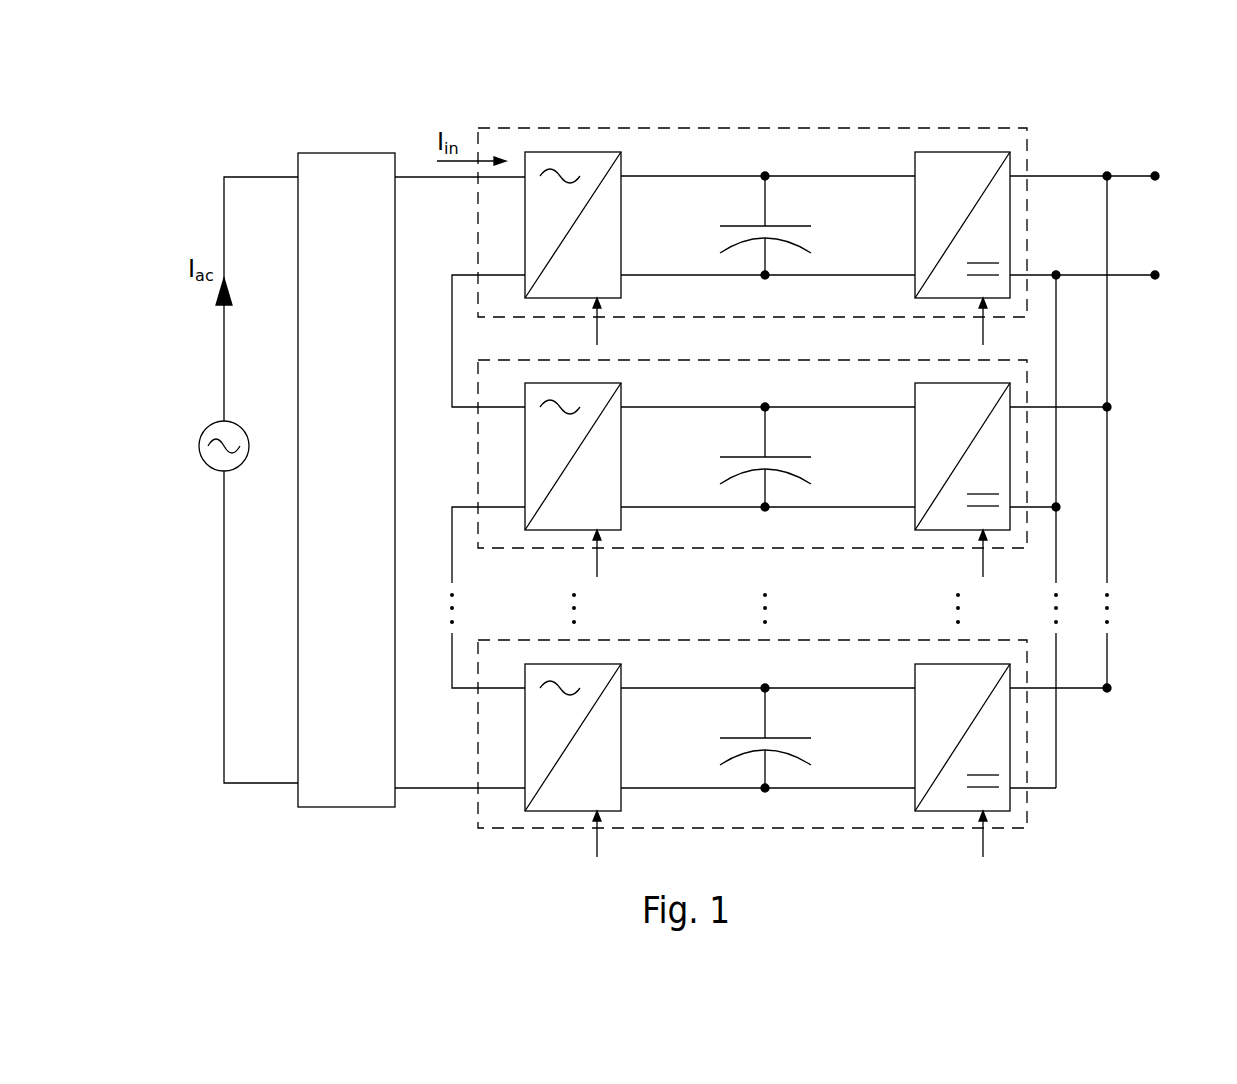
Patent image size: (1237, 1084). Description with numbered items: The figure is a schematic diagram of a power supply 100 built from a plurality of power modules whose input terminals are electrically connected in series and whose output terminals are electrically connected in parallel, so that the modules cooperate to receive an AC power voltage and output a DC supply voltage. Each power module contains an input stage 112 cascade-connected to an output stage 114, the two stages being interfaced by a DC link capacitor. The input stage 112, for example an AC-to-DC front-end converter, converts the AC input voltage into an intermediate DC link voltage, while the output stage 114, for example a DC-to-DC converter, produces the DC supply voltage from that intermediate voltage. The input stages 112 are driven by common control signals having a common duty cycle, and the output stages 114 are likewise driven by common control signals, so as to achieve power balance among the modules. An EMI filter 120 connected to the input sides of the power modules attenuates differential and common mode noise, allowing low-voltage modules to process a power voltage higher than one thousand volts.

The power supply 100 is at (839, 465).
The input stage 112 is at (573, 152).
The output stage 114 is at (960, 152).
The EMI filter 120 is at (364, 552).